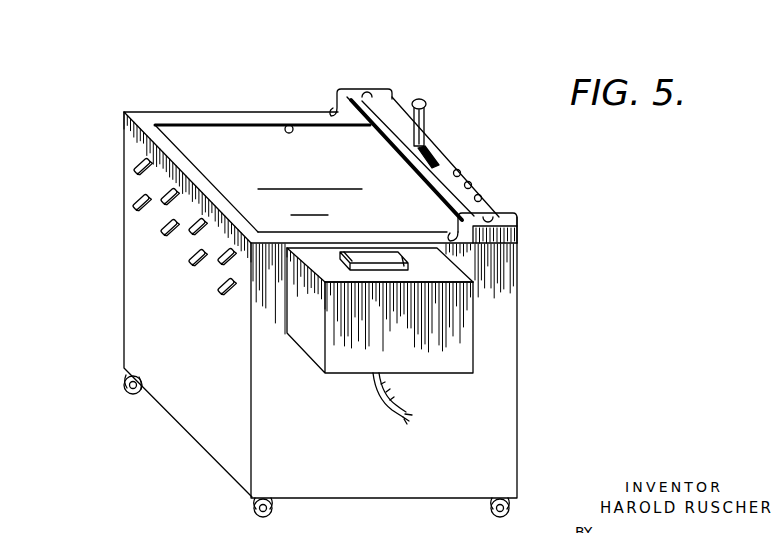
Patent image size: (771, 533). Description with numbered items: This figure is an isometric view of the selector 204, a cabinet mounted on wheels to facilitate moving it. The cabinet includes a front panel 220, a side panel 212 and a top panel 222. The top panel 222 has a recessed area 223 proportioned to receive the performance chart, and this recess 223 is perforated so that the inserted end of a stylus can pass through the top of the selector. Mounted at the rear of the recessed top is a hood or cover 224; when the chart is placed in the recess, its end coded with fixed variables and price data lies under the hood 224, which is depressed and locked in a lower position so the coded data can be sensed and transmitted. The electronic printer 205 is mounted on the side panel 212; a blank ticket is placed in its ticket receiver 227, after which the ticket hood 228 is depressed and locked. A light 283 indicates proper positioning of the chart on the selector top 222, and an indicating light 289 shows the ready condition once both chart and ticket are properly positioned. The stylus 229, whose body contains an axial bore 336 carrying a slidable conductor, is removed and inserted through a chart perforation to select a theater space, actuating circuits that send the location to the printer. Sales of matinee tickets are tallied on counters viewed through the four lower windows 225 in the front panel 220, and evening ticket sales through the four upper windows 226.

The selector 204 is at (270, 322).
The electronic printer 205 is at (310, 368).
The side panel 212 is at (381, 488).
The front panel 220 is at (135, 347).
The top panel 222 is at (207, 112).
The recessed area 223 is at (291, 124).
The hood 224 is at (370, 76).
The lower windows 225 is at (162, 226).
The upper windows 226 is at (165, 188).
The ticket receiver 227 is at (453, 281).
The ticket hood 228 is at (412, 270).
The stylus 229 is at (425, 103).
The light 283 is at (472, 185).
The indicating light 289 is at (482, 198).
The axial bore 336 is at (461, 173).